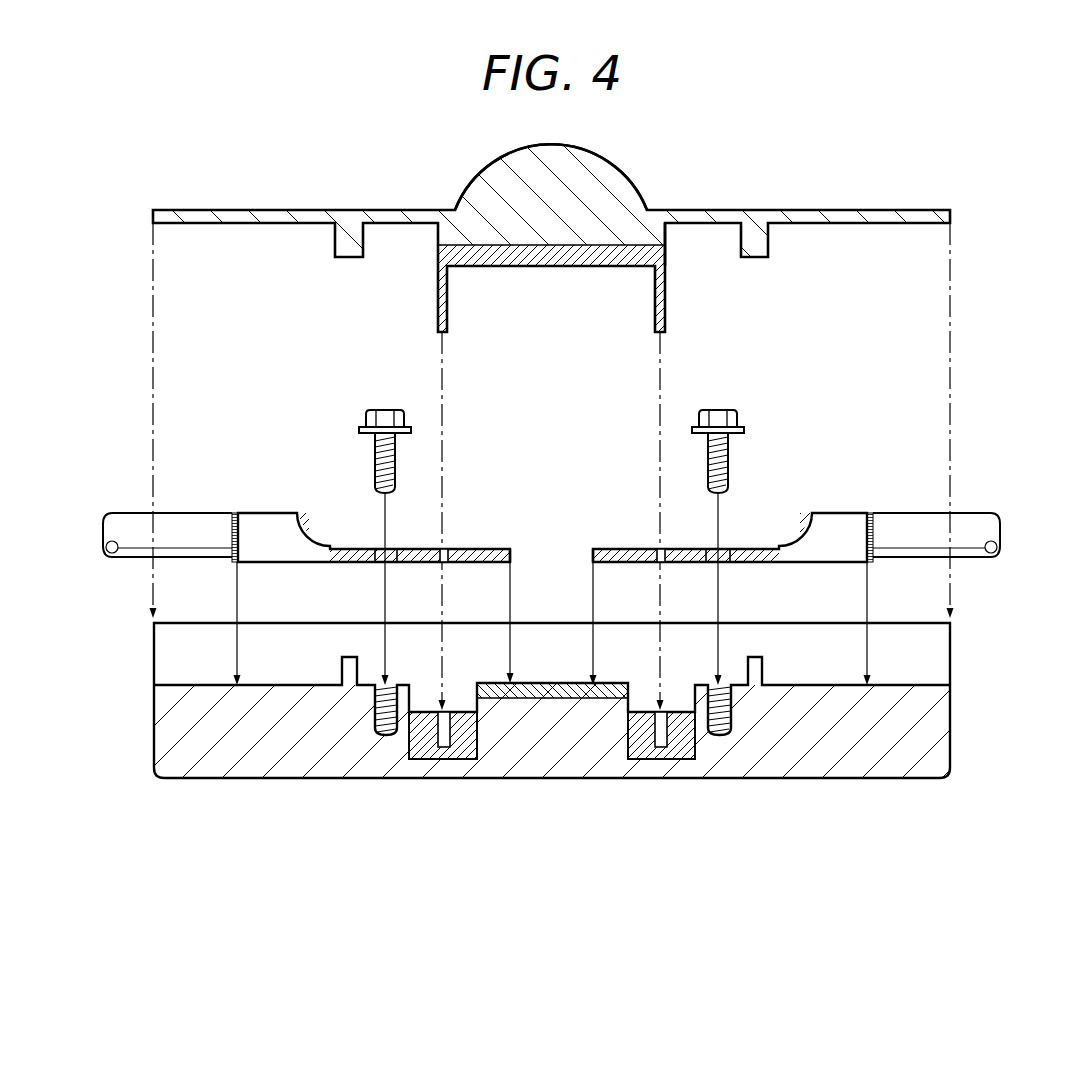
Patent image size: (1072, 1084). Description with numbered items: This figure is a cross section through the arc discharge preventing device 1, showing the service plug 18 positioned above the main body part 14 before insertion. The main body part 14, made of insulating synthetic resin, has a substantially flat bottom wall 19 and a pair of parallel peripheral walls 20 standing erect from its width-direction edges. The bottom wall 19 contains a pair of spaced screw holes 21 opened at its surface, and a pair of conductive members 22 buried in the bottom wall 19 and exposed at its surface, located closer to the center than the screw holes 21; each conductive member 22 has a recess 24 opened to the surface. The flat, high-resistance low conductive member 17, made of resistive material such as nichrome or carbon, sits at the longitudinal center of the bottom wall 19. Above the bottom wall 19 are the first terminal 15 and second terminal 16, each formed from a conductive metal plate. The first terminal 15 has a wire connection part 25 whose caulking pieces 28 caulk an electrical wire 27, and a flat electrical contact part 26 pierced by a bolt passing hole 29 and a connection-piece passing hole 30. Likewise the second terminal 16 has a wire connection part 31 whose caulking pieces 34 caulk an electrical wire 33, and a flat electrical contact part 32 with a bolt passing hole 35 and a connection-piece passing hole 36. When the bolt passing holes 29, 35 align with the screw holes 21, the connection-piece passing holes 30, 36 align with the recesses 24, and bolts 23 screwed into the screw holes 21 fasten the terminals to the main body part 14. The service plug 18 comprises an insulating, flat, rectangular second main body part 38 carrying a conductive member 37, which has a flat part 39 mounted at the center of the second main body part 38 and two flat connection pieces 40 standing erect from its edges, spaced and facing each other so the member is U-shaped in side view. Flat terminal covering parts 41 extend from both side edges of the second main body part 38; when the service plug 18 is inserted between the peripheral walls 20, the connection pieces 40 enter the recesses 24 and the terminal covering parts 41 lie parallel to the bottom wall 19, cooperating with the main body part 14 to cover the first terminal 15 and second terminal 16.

The arc discharge preventing device 1 is at (803, 180).
The main body part 14 is at (590, 734).
The first terminal 15 is at (386, 521).
The second terminal 16 is at (736, 521).
The low conductive member 17 is at (541, 700).
The service plug 18 is at (617, 153).
The bottom wall 19 is at (808, 752).
The peripheral walls 20 is at (940, 656).
The screw holes 21 is at (390, 740).
The conductive members 22 is at (468, 752).
The bolts 23 is at (378, 408).
The recesses 24 is at (442, 750).
The wire connection part 25 is at (263, 564).
The electrical contact part 26 is at (502, 548).
The electrical wire 27 is at (128, 514).
The caulking pieces 28 is at (278, 518).
The bolt passing hole 29 is at (392, 548).
The connection-piece passing hole 30 is at (446, 548).
The wire connection part 31 is at (816, 564).
The electrical contact part 32 is at (680, 548).
The electrical wire 33 is at (978, 514).
The caulking pieces 34 is at (848, 518).
The bolt passing hole 35 is at (725, 548).
The connection-piece passing hole 36 is at (659, 548).
The conductive member 37 is at (667, 254).
The second main body part 38 is at (700, 210).
The flat part 39 is at (592, 267).
The connection pieces 40 is at (448, 310).
The terminal covering parts 41 is at (243, 218).